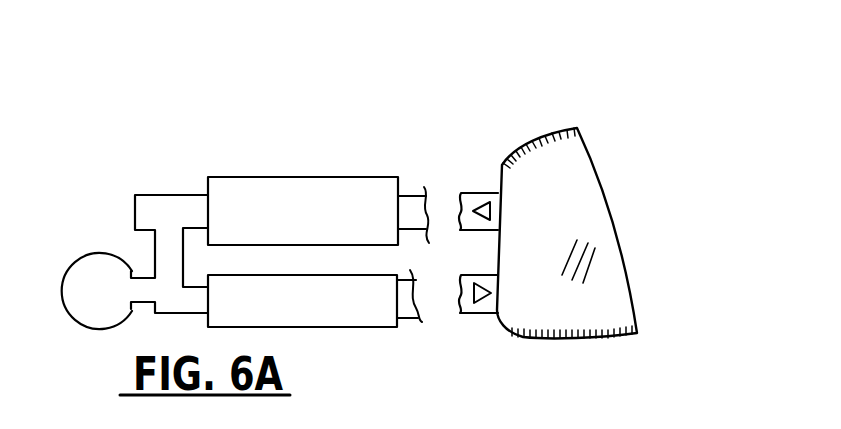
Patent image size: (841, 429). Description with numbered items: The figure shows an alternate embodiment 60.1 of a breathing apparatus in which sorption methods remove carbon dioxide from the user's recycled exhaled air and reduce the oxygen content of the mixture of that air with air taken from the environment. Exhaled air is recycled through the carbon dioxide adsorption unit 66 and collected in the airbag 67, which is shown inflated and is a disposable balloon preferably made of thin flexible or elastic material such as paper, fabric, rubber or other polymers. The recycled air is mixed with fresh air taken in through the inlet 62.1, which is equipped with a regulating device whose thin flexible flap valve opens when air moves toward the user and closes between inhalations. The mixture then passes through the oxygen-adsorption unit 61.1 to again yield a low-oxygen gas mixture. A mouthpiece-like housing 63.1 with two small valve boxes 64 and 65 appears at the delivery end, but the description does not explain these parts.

The alternate embodiment 60.1 is at (433, 117).
The oxygen-adsorption unit 61.1 is at (277, 198).
The inlet 62.1 is at (133, 202).
The plug housing 63.1 is at (590, 188).
The first arrow contact 64 is at (483, 210).
The second arrow contact 65 is at (488, 297).
The carbon dioxide adsorption unit 66 is at (328, 308).
The airbag 67 is at (88, 287).